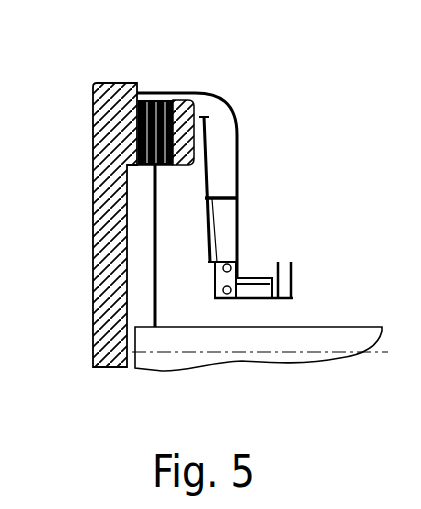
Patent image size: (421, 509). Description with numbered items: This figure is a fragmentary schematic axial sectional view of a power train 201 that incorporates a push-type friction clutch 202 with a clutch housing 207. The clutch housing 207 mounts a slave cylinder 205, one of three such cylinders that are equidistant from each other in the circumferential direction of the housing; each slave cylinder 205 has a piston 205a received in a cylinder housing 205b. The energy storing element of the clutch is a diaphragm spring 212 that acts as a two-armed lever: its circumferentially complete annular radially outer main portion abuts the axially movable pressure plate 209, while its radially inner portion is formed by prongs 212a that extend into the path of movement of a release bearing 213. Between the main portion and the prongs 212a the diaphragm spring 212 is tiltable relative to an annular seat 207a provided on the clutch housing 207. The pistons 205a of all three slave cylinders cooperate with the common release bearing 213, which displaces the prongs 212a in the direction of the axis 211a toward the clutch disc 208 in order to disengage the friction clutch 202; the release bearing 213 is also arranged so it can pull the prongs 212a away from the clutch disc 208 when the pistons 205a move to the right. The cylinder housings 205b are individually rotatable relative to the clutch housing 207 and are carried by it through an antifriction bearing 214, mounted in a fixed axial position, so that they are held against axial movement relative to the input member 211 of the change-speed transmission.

The power train 201 is at (117, 72).
The friction clutch 202 is at (341, 133).
The slave cylinder 205 is at (262, 261).
The piston 205a is at (253, 290).
The cylinder housing 205b is at (279, 298).
The clutch housing 207 is at (238, 118).
The annular seat 207a is at (236, 197).
The clutch disc 208 is at (137, 196).
The pressure plate 209 is at (182, 102).
The input member 211 is at (187, 365).
The axis 211a is at (92, 357).
The diaphragm spring 212 is at (218, 165).
The prongs 212a is at (206, 219).
The release bearing 213 is at (228, 298).
The antifriction bearing 214 is at (226, 265).